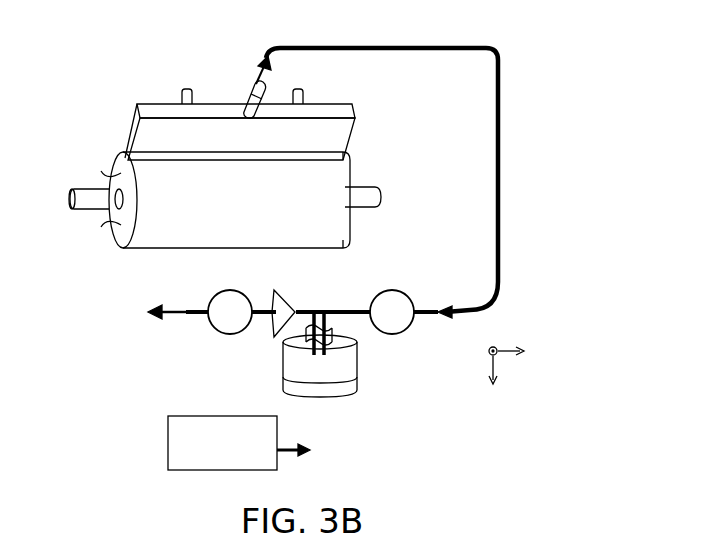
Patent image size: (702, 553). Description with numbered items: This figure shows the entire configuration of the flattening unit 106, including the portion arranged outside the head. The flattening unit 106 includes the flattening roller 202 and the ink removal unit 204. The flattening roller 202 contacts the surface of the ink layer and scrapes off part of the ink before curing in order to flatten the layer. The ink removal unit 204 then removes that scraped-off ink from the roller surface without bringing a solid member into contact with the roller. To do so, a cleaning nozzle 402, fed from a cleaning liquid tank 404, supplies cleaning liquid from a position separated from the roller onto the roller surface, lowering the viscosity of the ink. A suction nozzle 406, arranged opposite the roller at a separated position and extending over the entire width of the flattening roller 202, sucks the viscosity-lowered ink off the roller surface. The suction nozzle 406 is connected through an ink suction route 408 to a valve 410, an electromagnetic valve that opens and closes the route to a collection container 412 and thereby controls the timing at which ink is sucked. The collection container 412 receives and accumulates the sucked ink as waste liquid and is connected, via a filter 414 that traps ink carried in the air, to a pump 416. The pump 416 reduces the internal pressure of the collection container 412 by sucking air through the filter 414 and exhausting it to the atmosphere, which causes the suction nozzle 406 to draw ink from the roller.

The flattening unit 106 is at (117, 76).
The flattening roller 202 is at (158, 250).
The ink removal unit 204 is at (161, 356).
The cleaning nozzle 402 is at (182, 92).
The cleaning liquid tank 404 is at (185, 80).
The suction nozzle 406 is at (356, 124).
The ink suction route 408 is at (496, 208).
The valve 410 is at (400, 334).
The collection container 412 is at (284, 381).
The filter 414 is at (289, 290).
The pump 416 is at (212, 334).